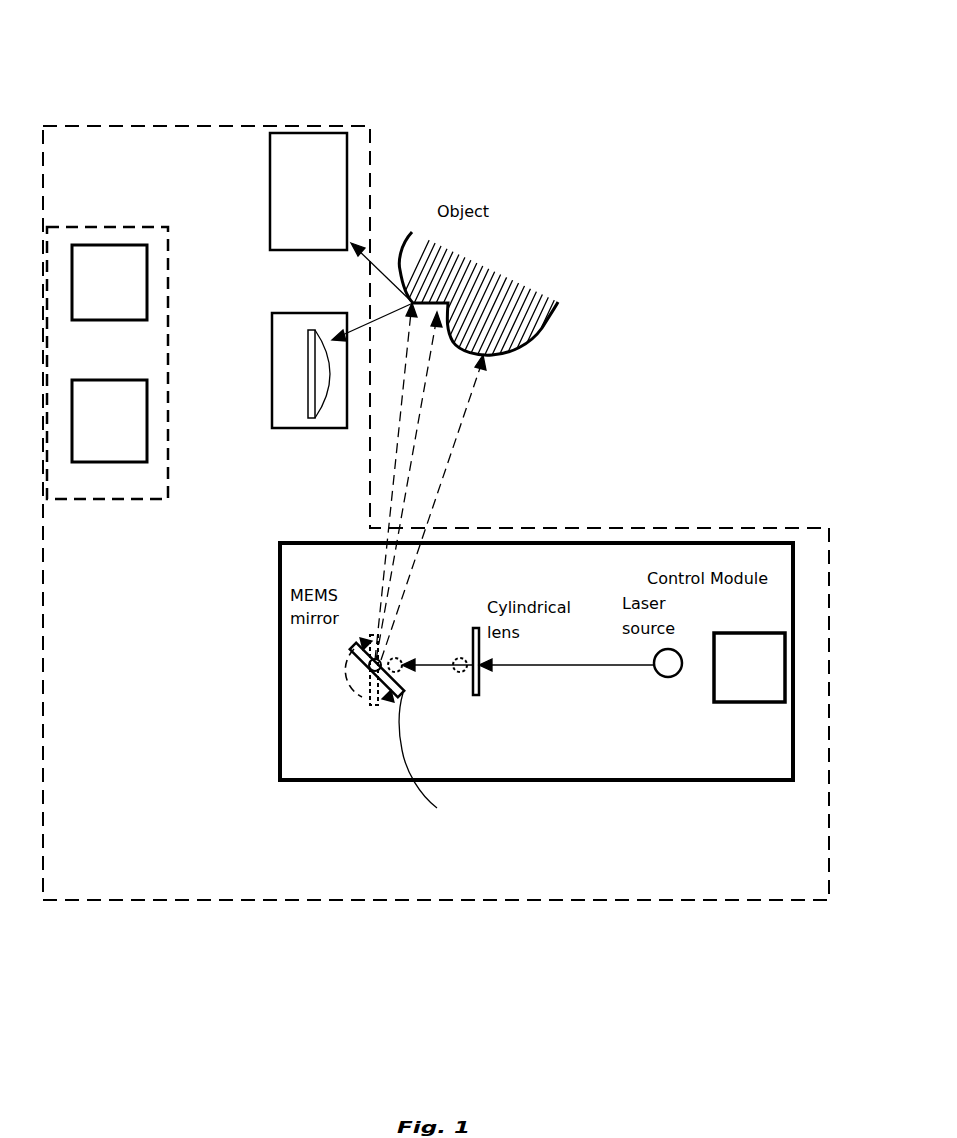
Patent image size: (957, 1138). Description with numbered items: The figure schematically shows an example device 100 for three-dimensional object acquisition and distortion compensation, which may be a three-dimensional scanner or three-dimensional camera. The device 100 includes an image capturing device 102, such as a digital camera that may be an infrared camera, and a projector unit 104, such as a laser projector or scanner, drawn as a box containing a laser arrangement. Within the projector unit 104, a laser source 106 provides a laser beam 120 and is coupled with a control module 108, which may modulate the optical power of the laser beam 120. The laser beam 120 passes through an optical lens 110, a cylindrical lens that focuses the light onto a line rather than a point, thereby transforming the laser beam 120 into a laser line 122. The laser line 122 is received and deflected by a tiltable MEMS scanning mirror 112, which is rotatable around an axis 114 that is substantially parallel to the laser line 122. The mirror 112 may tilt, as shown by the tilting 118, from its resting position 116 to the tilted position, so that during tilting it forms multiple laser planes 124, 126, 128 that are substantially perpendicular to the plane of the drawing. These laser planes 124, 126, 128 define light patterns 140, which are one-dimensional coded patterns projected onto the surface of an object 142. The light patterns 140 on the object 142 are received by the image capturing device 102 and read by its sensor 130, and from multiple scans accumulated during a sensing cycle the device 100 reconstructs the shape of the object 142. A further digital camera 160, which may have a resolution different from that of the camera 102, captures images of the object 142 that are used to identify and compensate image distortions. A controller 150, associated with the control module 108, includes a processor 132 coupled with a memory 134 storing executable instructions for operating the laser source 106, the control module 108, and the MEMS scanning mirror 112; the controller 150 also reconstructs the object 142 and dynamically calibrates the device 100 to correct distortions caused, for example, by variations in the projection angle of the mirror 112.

The device 100 is at (453, 88).
The image capturing device 102 is at (272, 313).
The projector unit 104 is at (695, 542).
The laser source 106 is at (678, 675).
The control module 108 is at (785, 673).
The optical lens 110 is at (478, 697).
The MEMS scanning mirror 112 is at (357, 646).
The axis 114 is at (370, 668).
The resting position 116 is at (375, 706).
The tilting 118 is at (357, 703).
The laser beam 120 is at (563, 666).
The laser line 122 is at (461, 673).
The laser plane 124 is at (396, 477).
The laser plane 126 is at (403, 496).
The laser plane 128 is at (433, 503).
The sensor 130 is at (305, 375).
The processor 132 is at (117, 244).
The memory 134 is at (142, 463).
The light pattern 140 is at (508, 322).
The object 142 is at (558, 302).
The controller 150 is at (163, 226).
The digital camera 160 is at (270, 133).